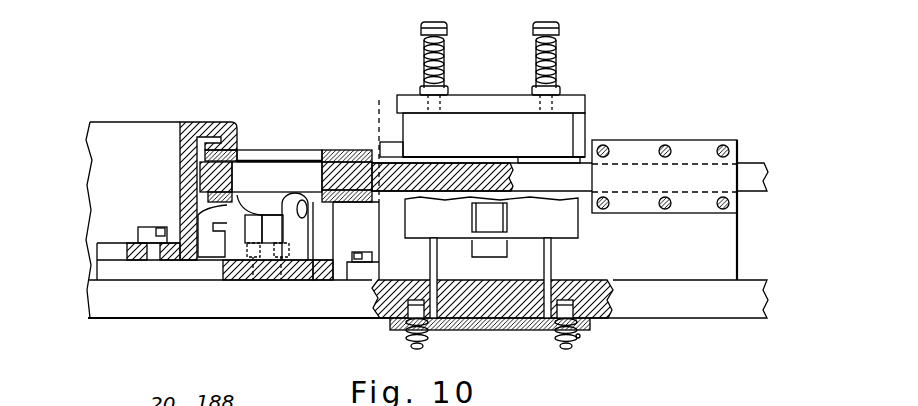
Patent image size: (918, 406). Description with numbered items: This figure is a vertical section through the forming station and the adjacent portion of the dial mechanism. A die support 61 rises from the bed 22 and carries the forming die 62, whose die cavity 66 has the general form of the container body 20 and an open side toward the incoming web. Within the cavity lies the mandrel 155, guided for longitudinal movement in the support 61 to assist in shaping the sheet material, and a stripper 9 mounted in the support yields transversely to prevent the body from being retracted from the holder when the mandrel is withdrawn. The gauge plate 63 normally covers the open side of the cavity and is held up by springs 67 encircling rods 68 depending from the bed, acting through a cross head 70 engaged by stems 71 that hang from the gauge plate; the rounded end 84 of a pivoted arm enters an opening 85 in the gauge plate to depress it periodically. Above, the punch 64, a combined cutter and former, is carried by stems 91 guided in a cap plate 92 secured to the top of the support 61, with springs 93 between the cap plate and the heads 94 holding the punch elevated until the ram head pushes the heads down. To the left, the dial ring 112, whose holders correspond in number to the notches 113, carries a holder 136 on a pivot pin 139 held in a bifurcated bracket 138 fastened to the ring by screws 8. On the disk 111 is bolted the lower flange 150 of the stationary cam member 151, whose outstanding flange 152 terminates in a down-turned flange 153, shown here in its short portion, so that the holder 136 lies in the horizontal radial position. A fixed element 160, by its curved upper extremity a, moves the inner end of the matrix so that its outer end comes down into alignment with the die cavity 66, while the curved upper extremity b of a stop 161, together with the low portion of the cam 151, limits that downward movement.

The cam member 151 is at (180, 122).
The outstanding flange 152 is at (208, 122).
The down-turned flange 153 is at (240, 147).
The holder 136 is at (271, 152).
The pivot pin 139 is at (261, 182).
The container body 20 is at (348, 158).
The forming die 62 is at (380, 140).
The stripper 9 is at (392, 140).
The spring 93 is at (422, 46).
The stem 91 is at (424, 63).
The head 94 is at (534, 28).
The cap plate 92 is at (590, 101).
The punch 64 is at (586, 134).
The die cavity 66 is at (526, 157).
The mandrel 155 is at (474, 176).
The rounded end 84 is at (490, 220).
The gauge plate 63 is at (572, 234).
The opening 85 is at (512, 240).
The cross head 70 is at (512, 331).
The stem 71 is at (438, 266).
The rod 68 is at (420, 347).
The spring 67 is at (578, 336).
The die support 61 is at (736, 252).
The bed 22 is at (204, 302).
The disk 111 is at (168, 284).
The lower flange 150 is at (127, 243).
The fixed element 160 is at (213, 221).
The curved upper extremity a is at (192, 190).
The screw 8 is at (253, 280).
The bifurcated bracket 138 is at (293, 282).
The dial ring 112 is at (307, 282).
The notch 113 is at (327, 282).
The stop 161 is at (340, 227).
The curved upper extremity b is at (338, 203).